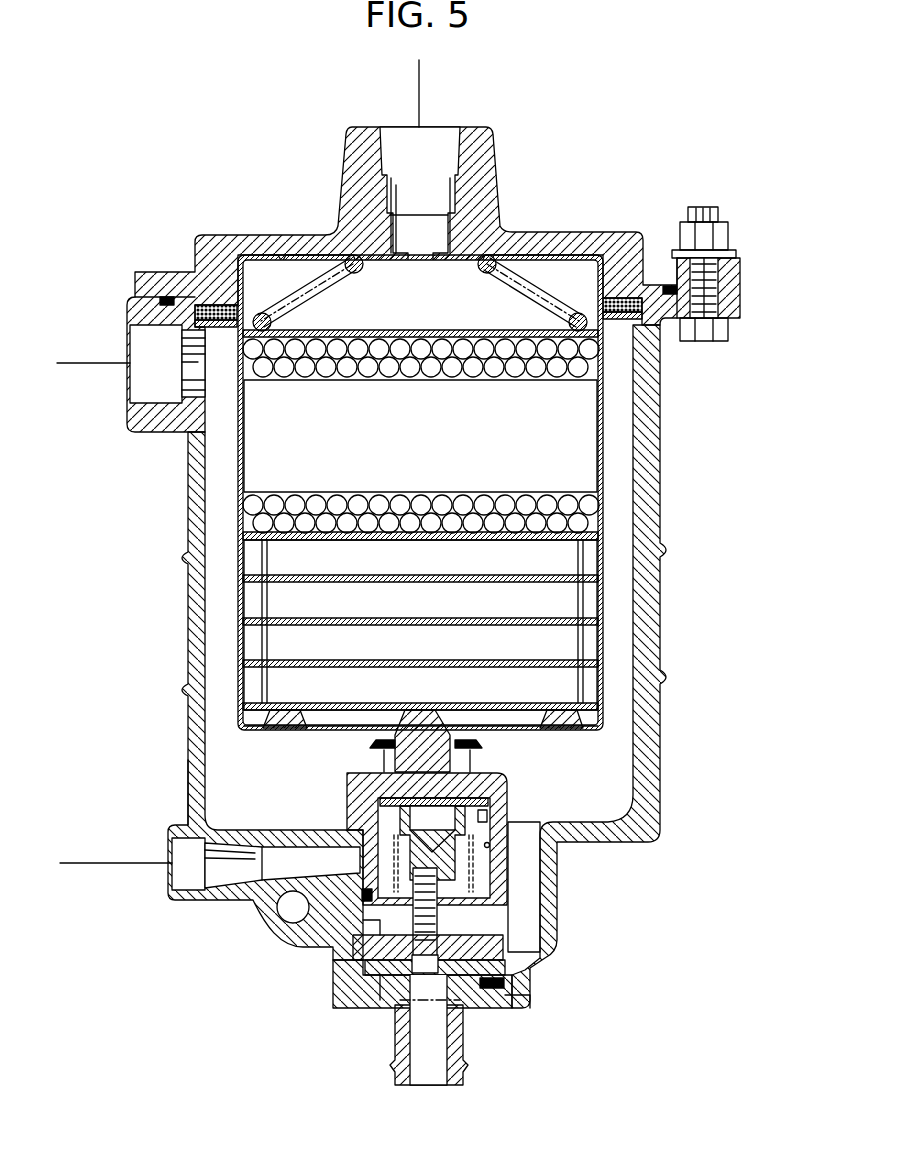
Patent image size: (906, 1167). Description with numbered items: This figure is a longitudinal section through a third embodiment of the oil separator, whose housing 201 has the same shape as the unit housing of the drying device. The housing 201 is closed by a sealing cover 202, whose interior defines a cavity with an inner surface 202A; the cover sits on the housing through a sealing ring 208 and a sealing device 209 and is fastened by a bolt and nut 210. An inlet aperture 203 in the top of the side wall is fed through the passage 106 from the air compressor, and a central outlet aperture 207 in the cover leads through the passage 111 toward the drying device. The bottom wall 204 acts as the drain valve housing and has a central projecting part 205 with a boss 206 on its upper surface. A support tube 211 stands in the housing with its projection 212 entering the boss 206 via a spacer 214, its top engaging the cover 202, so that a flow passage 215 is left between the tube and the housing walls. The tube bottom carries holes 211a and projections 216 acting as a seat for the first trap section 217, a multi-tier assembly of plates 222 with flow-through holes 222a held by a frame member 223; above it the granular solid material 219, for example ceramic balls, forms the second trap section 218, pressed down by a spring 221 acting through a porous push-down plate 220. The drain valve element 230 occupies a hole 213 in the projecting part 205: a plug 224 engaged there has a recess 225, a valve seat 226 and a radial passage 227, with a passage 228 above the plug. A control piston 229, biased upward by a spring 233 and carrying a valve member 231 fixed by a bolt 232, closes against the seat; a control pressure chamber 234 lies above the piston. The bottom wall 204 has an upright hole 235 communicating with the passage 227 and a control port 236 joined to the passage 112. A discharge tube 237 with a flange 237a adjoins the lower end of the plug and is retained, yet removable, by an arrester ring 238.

The passage 106 is at (88, 362).
The passage 111 is at (419, 96).
The passage 112 is at (103, 862).
The housing 201 is at (669, 476).
The sealing cover 202 is at (570, 231).
The inner surface of top cover 202A is at (282, 257).
The inlet aperture 203 is at (142, 380).
The bottom wall 204 is at (262, 887).
The projecting part 205 is at (500, 790).
The boss 206 is at (383, 754).
The central outlet aperture 207 is at (440, 225).
The sealing ring 208 is at (167, 297).
The sealing device 209 is at (218, 305).
The bolt and nut 210 is at (723, 236).
The support tube 211 is at (603, 405).
The holes 211a is at (340, 736).
The projection 212 is at (407, 709).
The hole 213 is at (473, 878).
The spacer 214 is at (487, 742).
The flow passage 215 is at (217, 576).
The projections 216 is at (272, 733).
The first trap section 217 is at (569, 600).
The second trap section 218 is at (262, 452).
The granular solid material 219 is at (470, 488).
The porous push-down plate 220 is at (393, 374).
The spring 221 is at (357, 274).
The plates 222 is at (537, 660).
The flow-through holes 222a is at (337, 576).
The frame member 223 is at (255, 607).
The plug 224 is at (480, 865).
The recess 225 is at (513, 968).
The valve seat 226 is at (540, 948).
The passage 227 is at (373, 927).
The passage 228 is at (357, 820).
The control piston 229 is at (497, 822).
The drain valve element 230 is at (329, 930).
The valve member 231 is at (385, 973).
The bolt 232 is at (362, 893).
The spring 233 is at (488, 845).
The spring 234 is at (457, 790).
The upright hole 235 is at (523, 913).
The control port 236 is at (190, 822).
The discharge tube 237 is at (463, 1043).
The flange 237a is at (505, 988).
The arrester ring 238 is at (517, 1003).